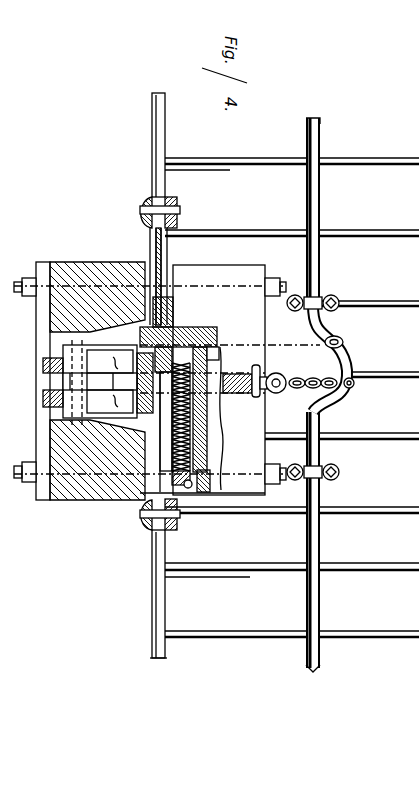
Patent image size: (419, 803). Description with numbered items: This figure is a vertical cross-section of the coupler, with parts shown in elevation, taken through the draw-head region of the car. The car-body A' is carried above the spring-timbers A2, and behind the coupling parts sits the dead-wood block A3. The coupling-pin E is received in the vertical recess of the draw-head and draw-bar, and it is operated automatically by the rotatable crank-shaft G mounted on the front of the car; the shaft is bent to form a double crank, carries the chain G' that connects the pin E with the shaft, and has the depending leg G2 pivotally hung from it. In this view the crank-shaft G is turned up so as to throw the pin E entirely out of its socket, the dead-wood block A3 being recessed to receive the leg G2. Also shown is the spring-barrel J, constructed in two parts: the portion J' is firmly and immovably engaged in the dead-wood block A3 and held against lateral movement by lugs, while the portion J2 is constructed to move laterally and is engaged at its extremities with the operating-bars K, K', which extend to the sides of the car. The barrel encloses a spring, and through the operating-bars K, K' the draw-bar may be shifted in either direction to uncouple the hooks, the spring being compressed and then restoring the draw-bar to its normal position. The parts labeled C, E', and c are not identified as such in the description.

The operating-bar K is at (149, 145).
The operating-bar K' is at (150, 594).
The movable portion of spring-barrel J2 is at (152, 363).
The car-body A' is at (292, 397).
The spring-timbers A2 is at (149, 383).
The dead-wood block A3 is at (230, 380).
The operating rod lower portion C is at (320, 542).
The coupling-pin E is at (245, 384).
The clevis and chain E' is at (301, 390).
The crank-shaft G is at (331, 221).
The chain G' is at (336, 361).
The depending leg G2 is at (311, 387).
The spring-barrel J is at (192, 425).
The fixed portion of spring-barrel J' is at (186, 421).
The slot c is at (210, 357).